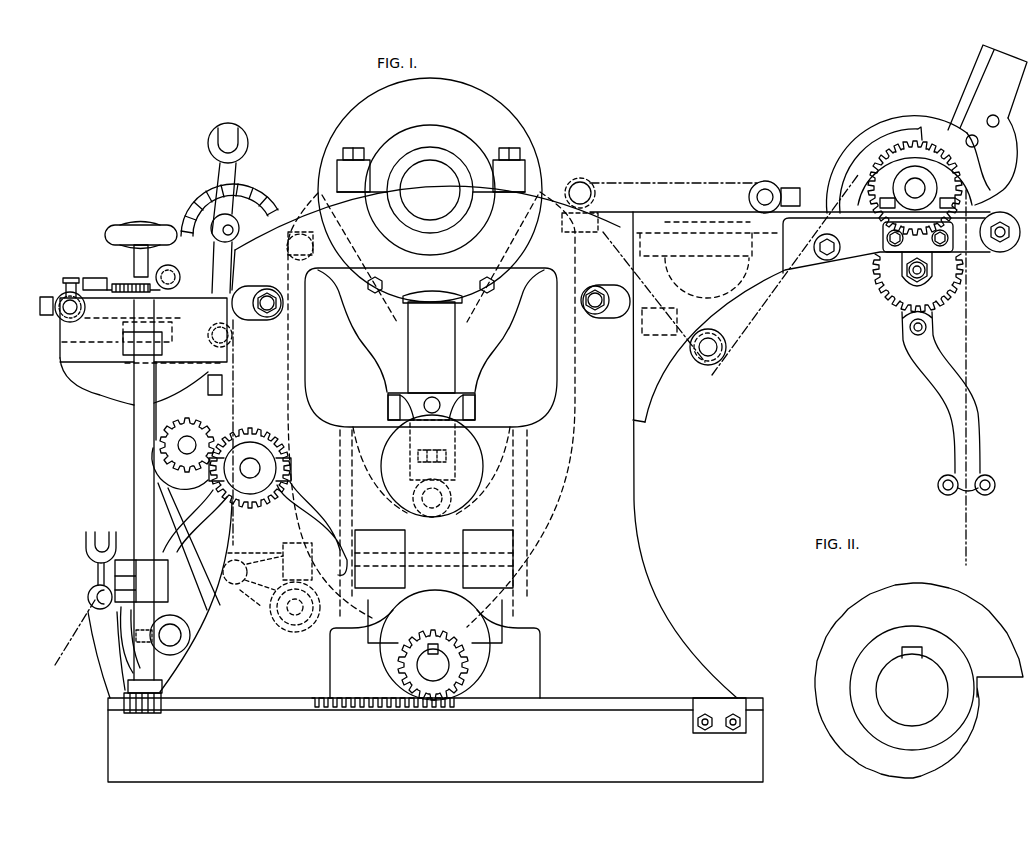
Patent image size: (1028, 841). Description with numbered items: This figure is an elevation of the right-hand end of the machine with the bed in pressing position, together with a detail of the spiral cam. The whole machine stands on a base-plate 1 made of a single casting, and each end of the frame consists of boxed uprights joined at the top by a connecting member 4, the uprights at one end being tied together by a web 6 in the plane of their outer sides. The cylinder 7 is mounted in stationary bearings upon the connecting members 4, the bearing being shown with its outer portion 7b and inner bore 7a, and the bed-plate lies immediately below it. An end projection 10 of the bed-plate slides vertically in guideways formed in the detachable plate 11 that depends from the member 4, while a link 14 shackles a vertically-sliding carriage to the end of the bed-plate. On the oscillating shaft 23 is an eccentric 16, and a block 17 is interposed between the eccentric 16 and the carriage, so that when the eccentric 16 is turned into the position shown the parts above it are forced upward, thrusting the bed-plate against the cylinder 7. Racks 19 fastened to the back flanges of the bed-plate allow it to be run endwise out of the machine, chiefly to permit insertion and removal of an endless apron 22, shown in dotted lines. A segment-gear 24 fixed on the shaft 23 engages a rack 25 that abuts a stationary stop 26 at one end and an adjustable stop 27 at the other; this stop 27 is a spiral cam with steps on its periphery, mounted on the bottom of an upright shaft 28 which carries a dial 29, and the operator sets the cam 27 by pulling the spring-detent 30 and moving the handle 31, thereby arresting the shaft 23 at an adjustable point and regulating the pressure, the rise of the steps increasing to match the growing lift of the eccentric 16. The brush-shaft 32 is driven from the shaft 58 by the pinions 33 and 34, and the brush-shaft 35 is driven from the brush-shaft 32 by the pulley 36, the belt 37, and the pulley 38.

In FIG. 1, the base-plate 1 is at (435, 740).
In FIG. 1, the connecting member 4 is at (590, 436).
In FIG. 1, the web 6 is at (441, 466).
In FIG. 1, the cylinder 7 is at (430, 190).
In FIG. 1, the bearing bore 7a is at (443, 155).
In FIG. 1, the bearing ring 7b is at (392, 152).
In FIG. 1, the end projection 10 is at (432, 342).
In FIG. 1, the detachable plate 11 is at (431, 331).
In FIG. 1, the link 14 is at (418, 456).
In FIG. 1, the eccentric 16 is at (435, 645).
In FIG. 1, the block 17 is at (390, 624).
In FIG. 1, the rack 19 is at (388, 409).
In FIG. 1, the endless apron 22 is at (577, 411).
In FIG. 1, the shaft 23 is at (433, 665).
In FIG. 1, the segment-gear 24 is at (455, 651).
In FIG. 1, the rack 25 is at (410, 714).
In FIG. 1, the stationary stop 26 is at (727, 722).
In FIG. 1, the adjustable stop 27 is at (153, 716).
In FIG. 11, the adjustable stop 27 is at (919, 680).
In FIG. 1, the upright shaft 28 is at (145, 496).
In FIG. 1, the dial 29 is at (125, 286).
In FIG. 1, the spring-detent 30 is at (77, 280).
In FIG. 1, the handle 31 is at (138, 228).
In FIG. 1, the brush-shaft 32 is at (182, 446).
In FIG. 1, the pinion 33 is at (254, 438).
In FIG. 1, the pinion 34 is at (184, 437).
In FIG. 1, the brush-shaft 35 is at (173, 637).
In FIG. 1, the pulley 36 is at (160, 472).
In FIG. 1, the belt 37 is at (182, 572).
In FIG. 1, the pulley 38 is at (170, 626).
In FIG. 1, the shaft 58 is at (249, 468).